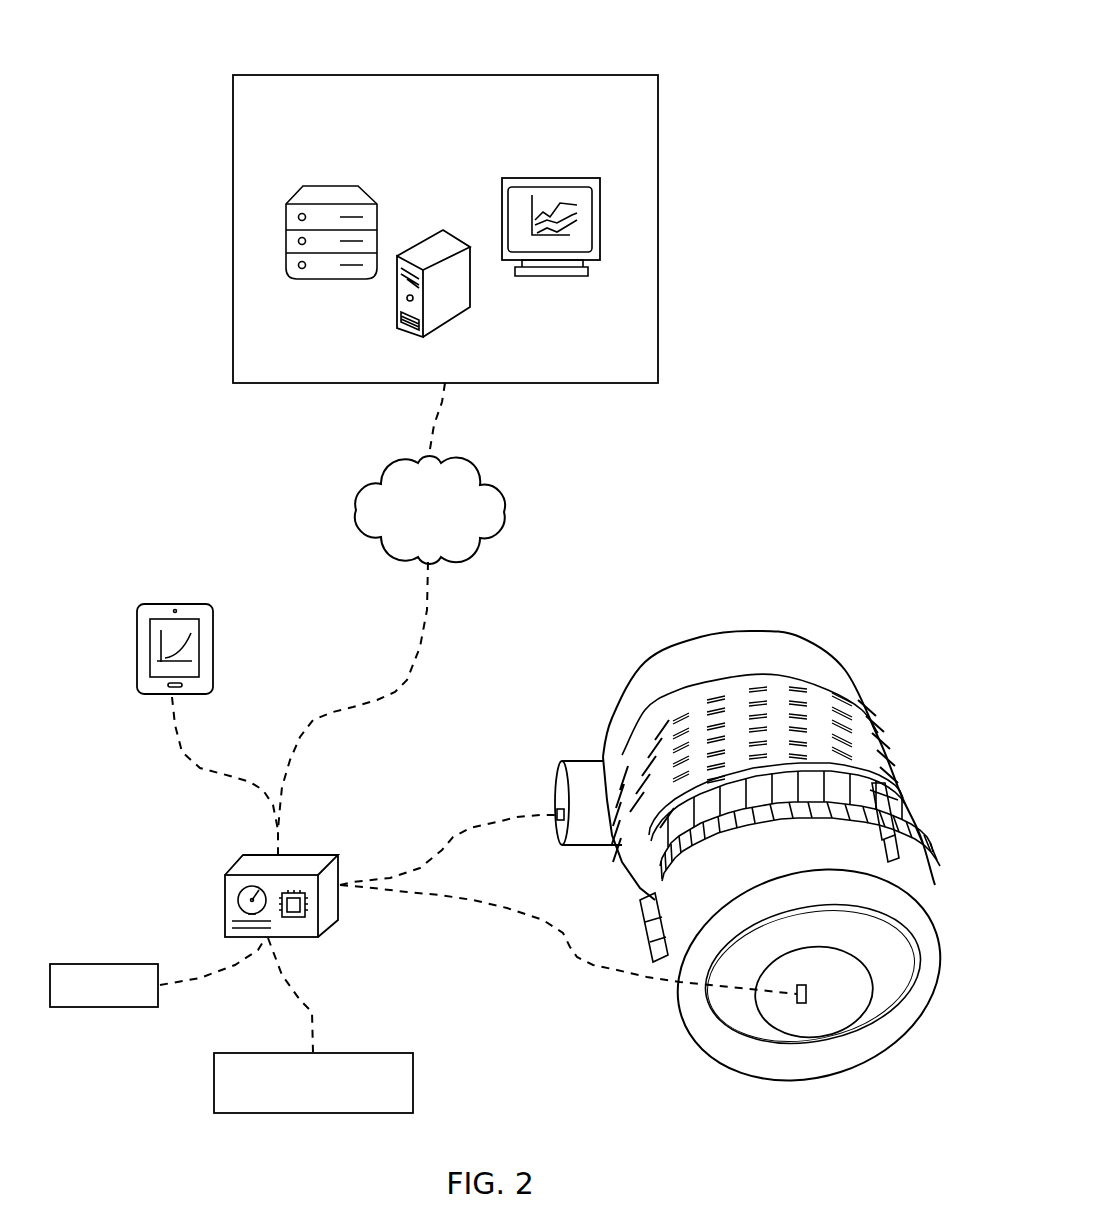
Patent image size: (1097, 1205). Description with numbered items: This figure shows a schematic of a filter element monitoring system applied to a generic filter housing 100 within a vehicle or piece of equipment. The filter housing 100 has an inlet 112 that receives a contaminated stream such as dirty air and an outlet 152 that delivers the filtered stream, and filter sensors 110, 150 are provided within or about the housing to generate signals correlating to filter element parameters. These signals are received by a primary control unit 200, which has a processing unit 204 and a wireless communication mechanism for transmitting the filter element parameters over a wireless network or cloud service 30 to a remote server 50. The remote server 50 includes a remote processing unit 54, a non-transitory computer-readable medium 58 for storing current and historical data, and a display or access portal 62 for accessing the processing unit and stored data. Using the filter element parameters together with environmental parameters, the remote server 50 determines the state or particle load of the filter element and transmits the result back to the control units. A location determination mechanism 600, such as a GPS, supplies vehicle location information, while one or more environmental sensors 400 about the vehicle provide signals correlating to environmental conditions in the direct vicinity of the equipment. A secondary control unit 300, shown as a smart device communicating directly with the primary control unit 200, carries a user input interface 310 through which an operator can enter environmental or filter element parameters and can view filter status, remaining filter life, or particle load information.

The wireless network 30 is at (503, 515).
The remote server 50 is at (658, 230).
The remote processing unit 54 is at (427, 232).
The non-transitory computer-readable medium 58 is at (335, 186).
The display or access portal 62 is at (572, 178).
The filter housing 100 is at (822, 648).
The filter sensor 110 is at (558, 773).
The inlet 112 is at (580, 762).
The filter sensor 150 is at (810, 994).
The outlet 152 is at (812, 1027).
The primary control unit 200 is at (243, 903).
The processing unit 204 is at (300, 917).
The secondary control unit 300 is at (125, 615).
The user input interface 310 is at (158, 648).
The environmental sensors 400 is at (413, 1082).
The location determination mechanism 600 is at (103, 1008).